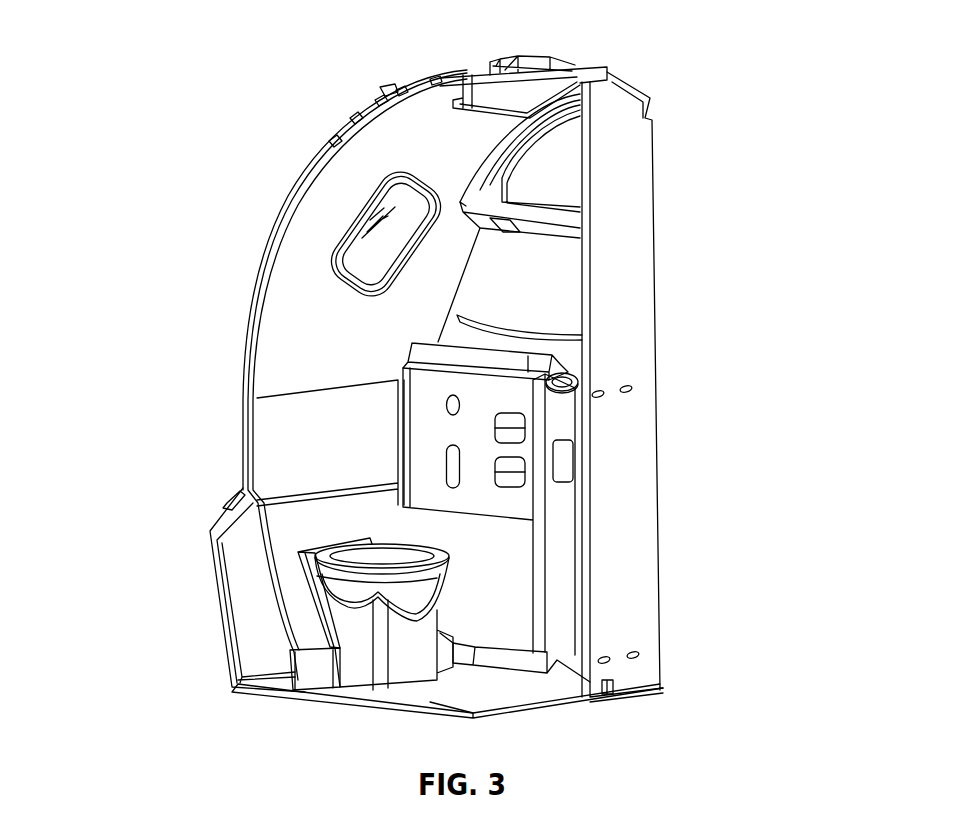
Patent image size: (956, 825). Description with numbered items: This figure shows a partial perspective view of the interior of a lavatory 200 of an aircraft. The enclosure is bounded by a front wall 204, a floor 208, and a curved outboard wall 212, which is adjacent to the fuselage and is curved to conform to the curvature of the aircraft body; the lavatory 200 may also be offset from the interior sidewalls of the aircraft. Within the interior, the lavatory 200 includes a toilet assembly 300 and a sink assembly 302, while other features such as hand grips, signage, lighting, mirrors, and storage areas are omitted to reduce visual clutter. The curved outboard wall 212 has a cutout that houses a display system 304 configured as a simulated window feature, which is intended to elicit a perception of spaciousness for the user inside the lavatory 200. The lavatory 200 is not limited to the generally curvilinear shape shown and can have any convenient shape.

The lavatory 200 is at (230, 95).
The front wall 204 is at (632, 338).
The floor 208 is at (397, 708).
The curved outboard wall 212 is at (265, 257).
The toilet assembly 300 is at (337, 586).
The sink assembly 302 is at (573, 423).
The display system 304 is at (383, 231).